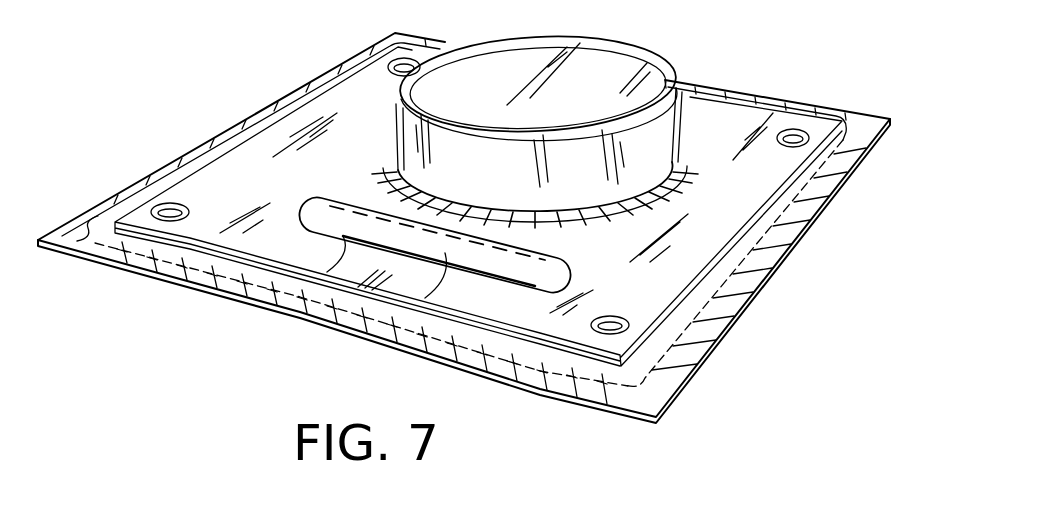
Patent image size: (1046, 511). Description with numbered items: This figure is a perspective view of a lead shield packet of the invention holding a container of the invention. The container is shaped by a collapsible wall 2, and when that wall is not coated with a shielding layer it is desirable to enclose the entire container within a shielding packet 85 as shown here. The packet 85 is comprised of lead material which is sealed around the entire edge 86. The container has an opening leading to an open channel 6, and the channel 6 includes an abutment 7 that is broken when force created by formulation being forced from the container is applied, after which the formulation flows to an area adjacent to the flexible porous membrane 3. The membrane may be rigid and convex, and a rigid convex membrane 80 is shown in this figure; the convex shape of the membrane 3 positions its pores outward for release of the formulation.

The collapsible wall 2 is at (554, 147).
The flexible porous membrane 3 is at (372, 336).
The open channel 6 is at (540, 236).
The abutment 7 is at (503, 212).
The rigid convex membrane 80 is at (268, 308).
The shielding packet 85 is at (697, 84).
The edge 86 is at (57, 248).